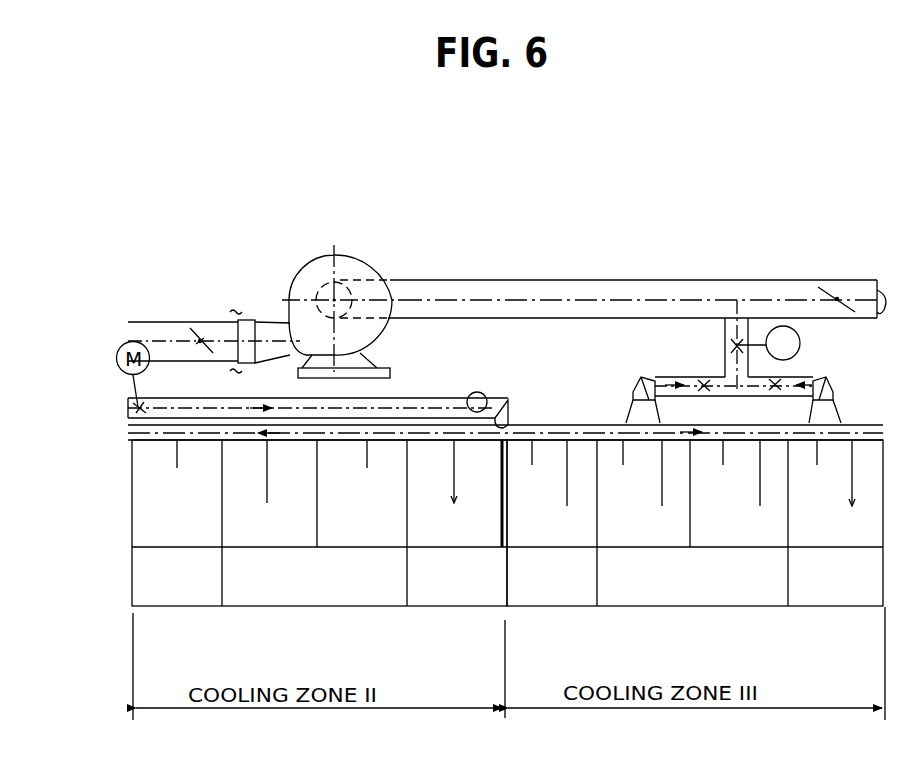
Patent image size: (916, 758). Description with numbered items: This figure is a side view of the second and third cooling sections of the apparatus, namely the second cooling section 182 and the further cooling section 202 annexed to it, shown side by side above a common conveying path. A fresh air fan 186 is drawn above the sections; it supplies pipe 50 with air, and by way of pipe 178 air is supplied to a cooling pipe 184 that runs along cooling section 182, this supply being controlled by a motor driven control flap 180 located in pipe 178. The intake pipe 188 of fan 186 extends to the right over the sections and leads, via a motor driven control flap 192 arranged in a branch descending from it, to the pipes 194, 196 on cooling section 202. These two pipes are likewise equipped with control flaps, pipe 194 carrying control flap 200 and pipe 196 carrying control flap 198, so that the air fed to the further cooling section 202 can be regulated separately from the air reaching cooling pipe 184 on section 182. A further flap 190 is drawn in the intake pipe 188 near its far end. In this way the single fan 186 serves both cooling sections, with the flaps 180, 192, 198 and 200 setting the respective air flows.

The pipe 50 is at (160, 338).
The pipe 178 is at (183, 404).
The motor driven control flap 180 is at (135, 409).
The second cooling section 182 is at (290, 548).
The cooling pipe 184 is at (347, 437).
The fresh air fan 186 is at (357, 258).
The intake pipe 188 is at (595, 283).
The damper valve 190 is at (838, 297).
The motor driven control flap 192 is at (730, 343).
The pipe 194 is at (633, 397).
The pipe 196 is at (834, 400).
The control flap 198 is at (778, 383).
The control flap 200 is at (704, 383).
The further cooling section 202 is at (718, 548).